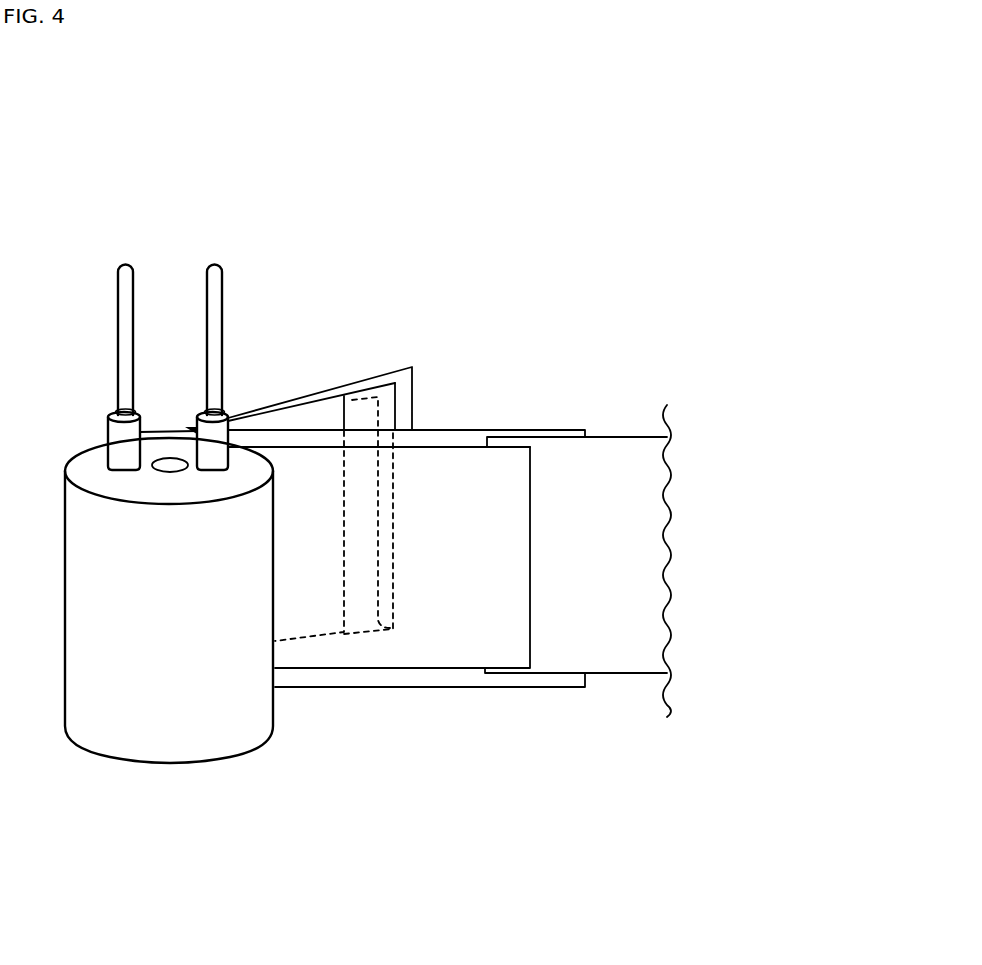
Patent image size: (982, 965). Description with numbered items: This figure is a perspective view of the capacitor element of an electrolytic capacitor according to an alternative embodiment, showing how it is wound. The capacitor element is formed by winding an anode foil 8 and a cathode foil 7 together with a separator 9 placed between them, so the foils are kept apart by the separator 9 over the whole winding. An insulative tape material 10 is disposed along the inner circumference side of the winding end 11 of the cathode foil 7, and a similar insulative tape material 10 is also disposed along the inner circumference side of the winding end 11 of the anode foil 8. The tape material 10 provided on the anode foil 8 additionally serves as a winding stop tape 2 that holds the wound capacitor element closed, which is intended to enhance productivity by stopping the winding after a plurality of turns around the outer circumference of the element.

The winding stop tape 2 is at (648, 475).
The cathode foil 7 is at (300, 410).
The anode foil 8 is at (392, 665).
The separator 9 is at (415, 386).
The tape material 10 is at (362, 383).
The winding end 11 is at (380, 487).